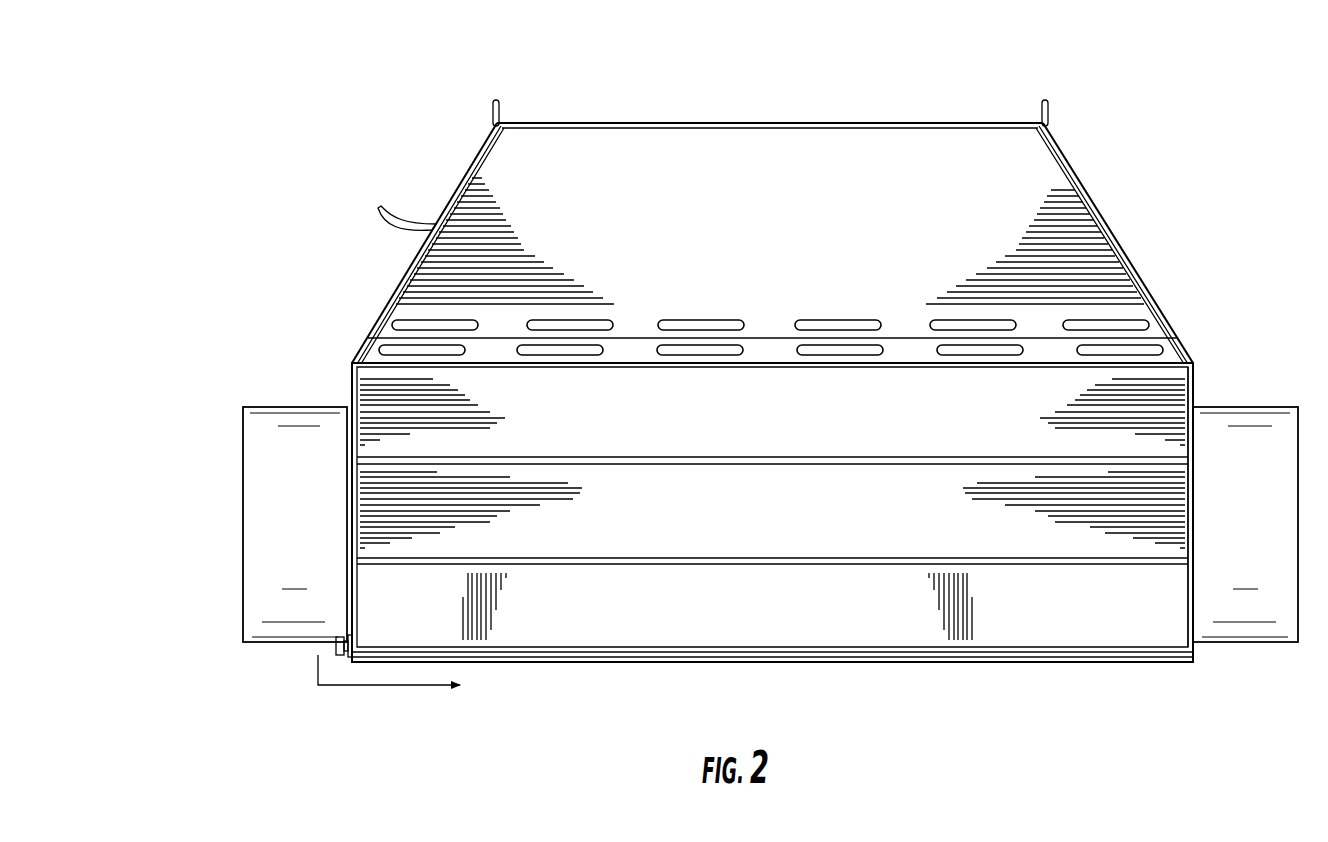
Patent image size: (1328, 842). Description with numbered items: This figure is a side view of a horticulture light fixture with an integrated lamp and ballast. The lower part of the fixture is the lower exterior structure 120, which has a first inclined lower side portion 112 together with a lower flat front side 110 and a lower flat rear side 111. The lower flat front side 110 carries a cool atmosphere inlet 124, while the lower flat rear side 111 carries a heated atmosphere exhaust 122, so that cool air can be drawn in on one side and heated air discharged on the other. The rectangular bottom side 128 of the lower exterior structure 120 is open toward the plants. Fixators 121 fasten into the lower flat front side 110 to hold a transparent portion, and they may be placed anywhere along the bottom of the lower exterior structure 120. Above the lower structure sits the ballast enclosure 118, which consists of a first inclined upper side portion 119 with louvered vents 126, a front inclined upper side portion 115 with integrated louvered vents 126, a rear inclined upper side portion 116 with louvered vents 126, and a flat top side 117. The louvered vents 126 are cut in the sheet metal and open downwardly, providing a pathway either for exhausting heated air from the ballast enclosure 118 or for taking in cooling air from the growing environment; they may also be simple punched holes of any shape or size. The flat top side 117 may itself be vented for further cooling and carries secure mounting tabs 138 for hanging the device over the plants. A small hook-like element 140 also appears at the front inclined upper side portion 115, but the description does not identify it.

The lower flat front side 110 is at (352, 392).
The lower flat rear side 111 is at (1193, 395).
The first inclined lower side portion 112 is at (815, 427).
The front inclined upper side portion 115 is at (459, 177).
The rear inclined upper side portion 116 is at (1104, 203).
The flat top side 117 is at (782, 120).
The ballast enclosure 118 is at (564, 88).
The first inclined upper side portion 119 is at (816, 266).
The lower exterior structure 120 is at (318, 690).
The fixators 121 is at (335, 646).
The heated atmosphere exhaust 122 is at (1268, 528).
The cool atmosphere inlet 124 is at (326, 528).
The louvered vents 126 is at (381, 349).
The rectangular bottom side 128 is at (825, 665).
The secure mounting tabs 138 is at (498, 97).
The hook 140 is at (380, 212).